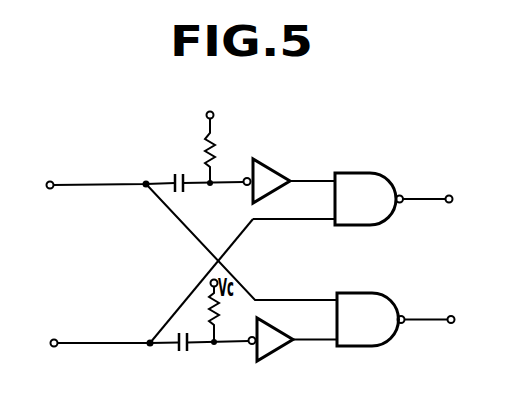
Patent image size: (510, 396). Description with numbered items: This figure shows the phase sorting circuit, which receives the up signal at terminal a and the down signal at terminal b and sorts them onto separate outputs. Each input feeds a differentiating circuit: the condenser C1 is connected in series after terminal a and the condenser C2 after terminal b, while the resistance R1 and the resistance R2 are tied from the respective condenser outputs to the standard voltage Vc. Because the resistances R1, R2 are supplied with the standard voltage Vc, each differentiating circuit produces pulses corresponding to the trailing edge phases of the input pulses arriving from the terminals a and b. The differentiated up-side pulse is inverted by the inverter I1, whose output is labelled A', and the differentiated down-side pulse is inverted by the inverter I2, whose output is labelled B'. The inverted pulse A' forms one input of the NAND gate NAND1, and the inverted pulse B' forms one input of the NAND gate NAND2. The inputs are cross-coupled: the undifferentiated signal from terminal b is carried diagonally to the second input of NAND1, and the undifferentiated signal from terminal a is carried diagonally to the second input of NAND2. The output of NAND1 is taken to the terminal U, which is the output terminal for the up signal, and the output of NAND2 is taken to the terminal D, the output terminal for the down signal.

The terminal a is at (42, 186).
The terminal b is at (48, 343).
The condenser C1 is at (181, 168).
The condenser C2 is at (186, 358).
The resistance R1 is at (221, 151).
The resistance R2 is at (224, 315).
The standard voltage Vc is at (213, 102).
The inverter I1 is at (264, 173).
The inverter I2 is at (268, 334).
The inverted signal A' is at (312, 169).
The inverted signal B' is at (315, 354).
The NAND gate NAND1 is at (364, 185).
The NAND gate NAND2 is at (365, 304).
The output terminal U is at (430, 186).
The output terminal D is at (432, 305).